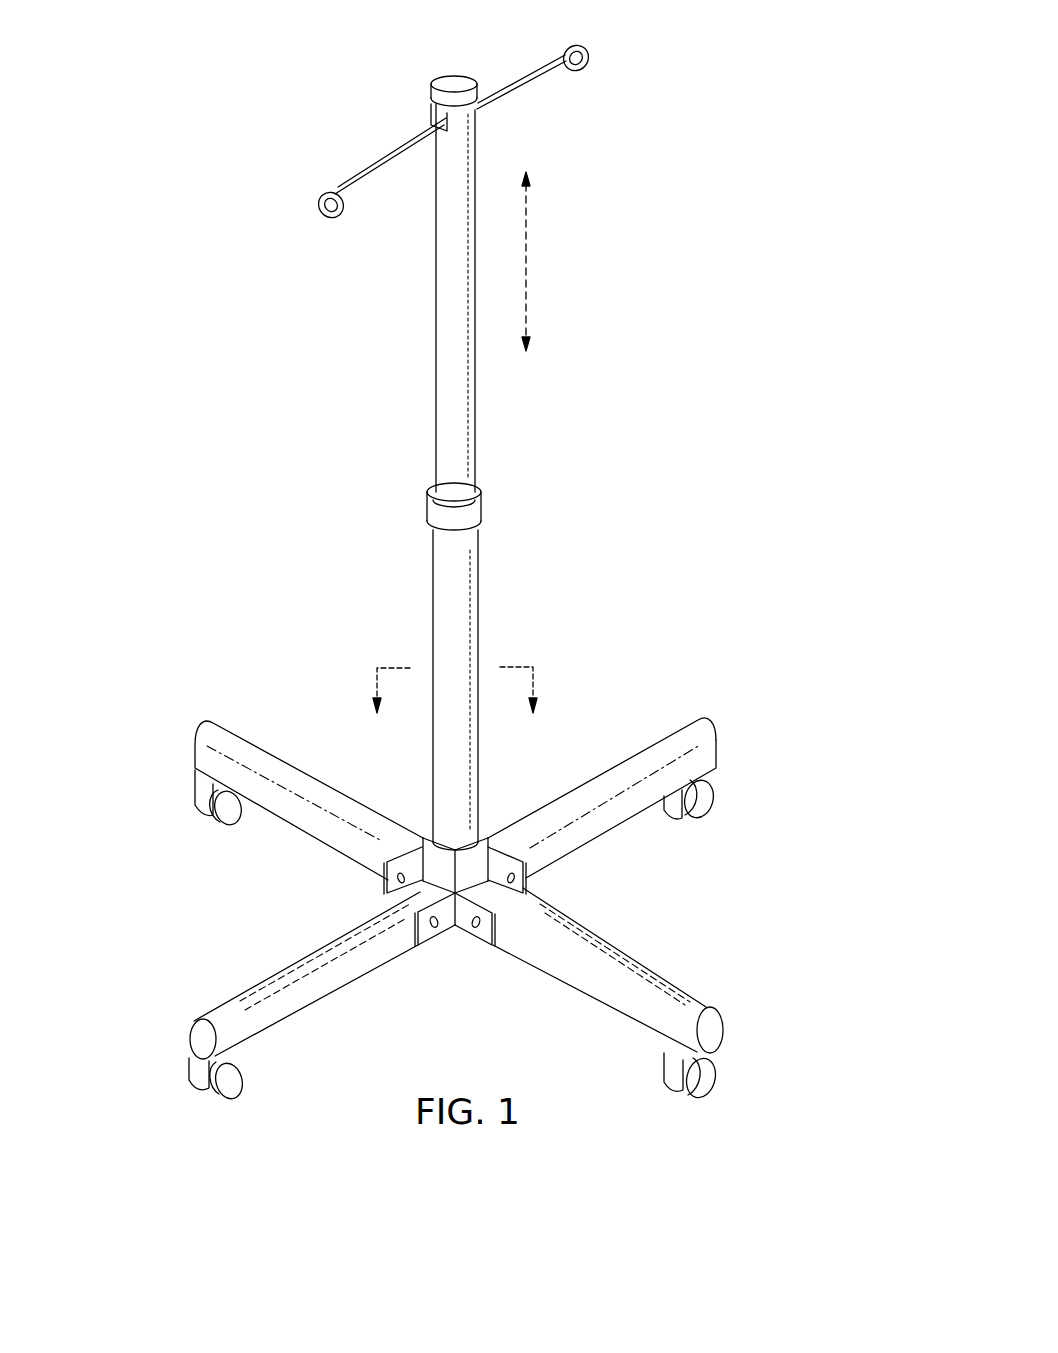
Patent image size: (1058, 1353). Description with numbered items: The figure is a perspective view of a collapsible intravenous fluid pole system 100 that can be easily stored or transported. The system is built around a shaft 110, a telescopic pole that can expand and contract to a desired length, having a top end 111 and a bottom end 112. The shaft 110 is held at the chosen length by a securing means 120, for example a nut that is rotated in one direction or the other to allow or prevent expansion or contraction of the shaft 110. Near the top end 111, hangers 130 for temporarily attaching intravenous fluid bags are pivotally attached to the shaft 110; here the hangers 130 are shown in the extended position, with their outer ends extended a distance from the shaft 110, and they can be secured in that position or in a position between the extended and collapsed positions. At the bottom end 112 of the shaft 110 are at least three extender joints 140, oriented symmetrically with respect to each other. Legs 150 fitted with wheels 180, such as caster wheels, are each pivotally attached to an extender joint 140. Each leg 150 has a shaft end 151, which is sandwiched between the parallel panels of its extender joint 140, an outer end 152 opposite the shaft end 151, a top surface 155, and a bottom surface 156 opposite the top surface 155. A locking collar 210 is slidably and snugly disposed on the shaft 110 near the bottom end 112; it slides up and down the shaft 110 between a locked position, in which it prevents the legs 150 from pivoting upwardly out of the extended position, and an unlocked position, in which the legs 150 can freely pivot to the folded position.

The intravenous fluid pole system 100 is at (578, 1125).
The shaft 110 is at (438, 382).
The top end 111 is at (436, 108).
The bottom end 112 is at (396, 868).
The securing means 120 is at (480, 520).
The hanger 130 is at (325, 198).
The extender joint 140 is at (480, 938).
The leg 150 is at (292, 768).
The shaft end 151 is at (420, 895).
The outer end 152 is at (715, 747).
The top surface 155 is at (618, 763).
The bottom surface 156 is at (628, 820).
The wheel 180 is at (200, 823).
The locking collar 210 is at (524, 890).